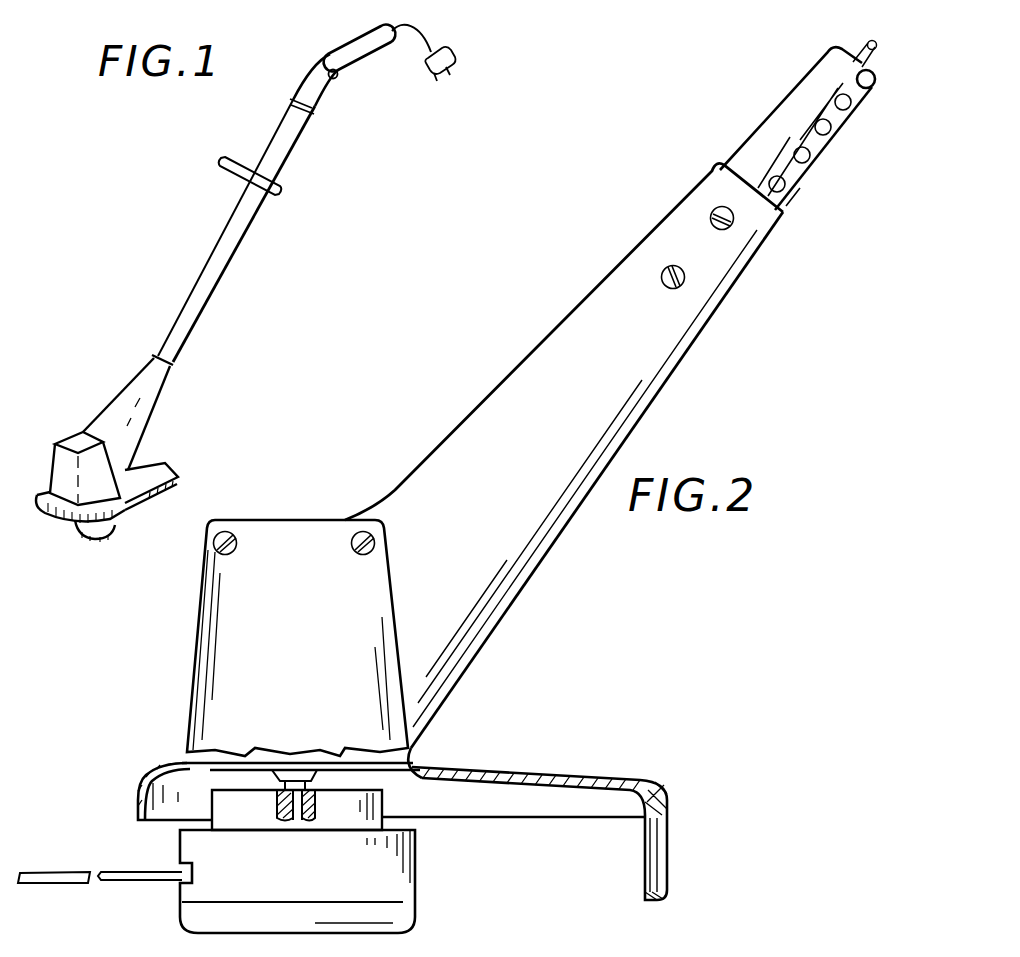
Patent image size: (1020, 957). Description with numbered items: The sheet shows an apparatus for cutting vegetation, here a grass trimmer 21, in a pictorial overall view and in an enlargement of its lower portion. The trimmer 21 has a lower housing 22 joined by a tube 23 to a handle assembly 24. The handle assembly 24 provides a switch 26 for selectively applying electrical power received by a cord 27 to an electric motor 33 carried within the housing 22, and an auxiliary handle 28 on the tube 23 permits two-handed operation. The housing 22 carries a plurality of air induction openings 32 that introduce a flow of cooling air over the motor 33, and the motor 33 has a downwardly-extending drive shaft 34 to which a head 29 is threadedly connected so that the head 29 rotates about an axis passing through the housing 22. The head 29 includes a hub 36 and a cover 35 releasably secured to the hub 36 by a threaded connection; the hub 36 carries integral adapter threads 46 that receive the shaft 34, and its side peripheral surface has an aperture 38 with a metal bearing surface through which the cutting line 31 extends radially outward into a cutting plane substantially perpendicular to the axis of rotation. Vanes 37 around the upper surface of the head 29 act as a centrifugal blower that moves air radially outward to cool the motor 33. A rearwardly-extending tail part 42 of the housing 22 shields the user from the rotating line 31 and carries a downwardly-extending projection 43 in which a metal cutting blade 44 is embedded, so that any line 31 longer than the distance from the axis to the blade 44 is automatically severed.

In FIG. 1, the grass trimmer 21 is at (178, 245).
In FIG. 1, the lower housing 22 is at (110, 405).
In FIG. 2, the lower housing 22 is at (587, 298).
In FIG. 1, the tube 23 is at (217, 274).
In FIG. 2, the tube 23 is at (798, 89).
In FIG. 1, the handle assembly 24 is at (350, 50).
In FIG. 1, the switch 26 is at (337, 79).
In FIG. 1, the cord 27 is at (421, 35).
In FIG. 1, the auxiliary handle 28 is at (222, 164).
In FIG. 1, the head 29 is at (95, 542).
In FIG. 2, the head 29 is at (417, 876).
In FIG. 1, the cutting line 31 is at (66, 524).
In FIG. 2, the cutting line 31 is at (53, 882).
In FIG. 2, the air induction openings 32 is at (824, 131).
In FIG. 2, the electric motor 33 is at (272, 758).
In FIG. 2, the drive shaft 34 is at (296, 793).
In FIG. 2, the cover 35 is at (397, 913).
In FIG. 2, the hub 36 is at (403, 850).
In FIG. 2, the vanes 37 is at (357, 804).
In FIG. 2, the aperture 38 is at (180, 882).
In FIG. 1, the tail part 42 is at (170, 466).
In FIG. 2, the tail part 42 is at (570, 781).
In FIG. 2, the projection 43 is at (667, 900).
In FIG. 2, the cutting blade 44 is at (660, 848).
In FIG. 2, the adapter threads 46 is at (277, 805).